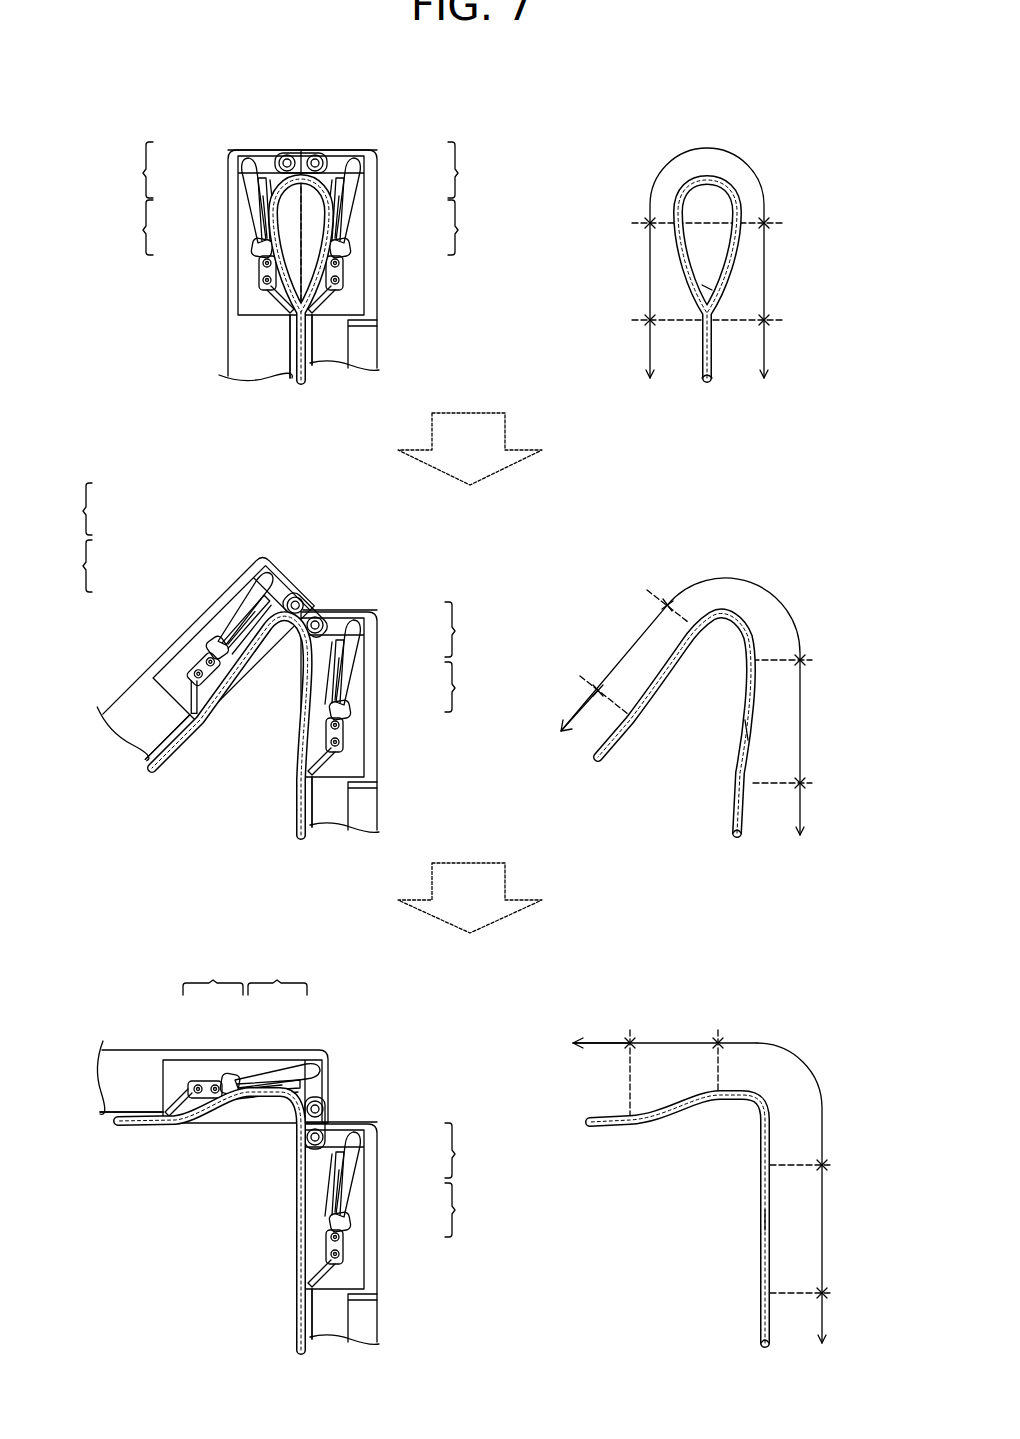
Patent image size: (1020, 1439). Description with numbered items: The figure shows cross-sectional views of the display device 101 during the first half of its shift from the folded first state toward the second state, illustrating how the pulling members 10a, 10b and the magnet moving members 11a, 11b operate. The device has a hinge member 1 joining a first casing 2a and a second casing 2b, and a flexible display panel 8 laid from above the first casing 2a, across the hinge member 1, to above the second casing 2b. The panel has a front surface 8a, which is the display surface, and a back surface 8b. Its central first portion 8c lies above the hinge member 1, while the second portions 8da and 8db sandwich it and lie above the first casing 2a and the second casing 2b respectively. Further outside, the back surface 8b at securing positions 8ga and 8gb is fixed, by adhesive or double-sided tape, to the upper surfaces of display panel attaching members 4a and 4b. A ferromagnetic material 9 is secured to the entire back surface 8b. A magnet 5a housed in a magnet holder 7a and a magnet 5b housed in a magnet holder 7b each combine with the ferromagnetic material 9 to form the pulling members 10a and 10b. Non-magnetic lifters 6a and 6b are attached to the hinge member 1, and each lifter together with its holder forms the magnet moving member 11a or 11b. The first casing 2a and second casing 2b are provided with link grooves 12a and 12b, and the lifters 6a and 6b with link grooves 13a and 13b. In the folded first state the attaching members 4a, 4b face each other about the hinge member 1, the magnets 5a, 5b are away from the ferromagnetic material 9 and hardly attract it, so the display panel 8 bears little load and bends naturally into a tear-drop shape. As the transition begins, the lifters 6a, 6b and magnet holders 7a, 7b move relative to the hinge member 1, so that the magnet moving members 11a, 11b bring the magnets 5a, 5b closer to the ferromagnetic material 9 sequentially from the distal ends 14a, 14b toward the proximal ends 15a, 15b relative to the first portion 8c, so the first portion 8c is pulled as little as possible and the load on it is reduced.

The display device 101 is at (418, 120).
The hinge member 1 is at (303, 150).
The first casing 2a is at (233, 338).
The second casing 2b is at (366, 338).
The display panel attaching member 4a is at (290, 354).
The display panel attaching member 4b is at (312, 358).
The magnet 5a is at (240, 172).
The magnet 5b is at (362, 172).
The lifter 6a is at (260, 220).
The lifter 6b is at (342, 220).
The magnet holder 7a is at (258, 250).
The magnet holder 7b is at (344, 250).
The display panel 8 is at (322, 368).
The front surface 8a is at (705, 290).
The back surface 8b is at (713, 366).
The first portion 8c is at (740, 730).
The second portion 8da is at (672, 668).
The second portion 8db is at (808, 758).
The securing position 8ga is at (600, 690).
The securing position 8gb is at (812, 840).
The ferromagnetic material 9 is at (263, 212).
The pulling member 10a is at (171, 568).
The pulling member 10b is at (476, 660).
The magnet moving member 11a is at (139, 597).
The magnet moving member 11b is at (476, 718).
The link groove 12a is at (258, 293).
The link groove 12b is at (344, 293).
The link groove 13a is at (260, 263).
The link groove 13b is at (342, 263).
The distal end 14a is at (283, 157).
The distal end 14b is at (320, 157).
The proximal end 15a is at (244, 163).
The proximal end 15b is at (358, 163).